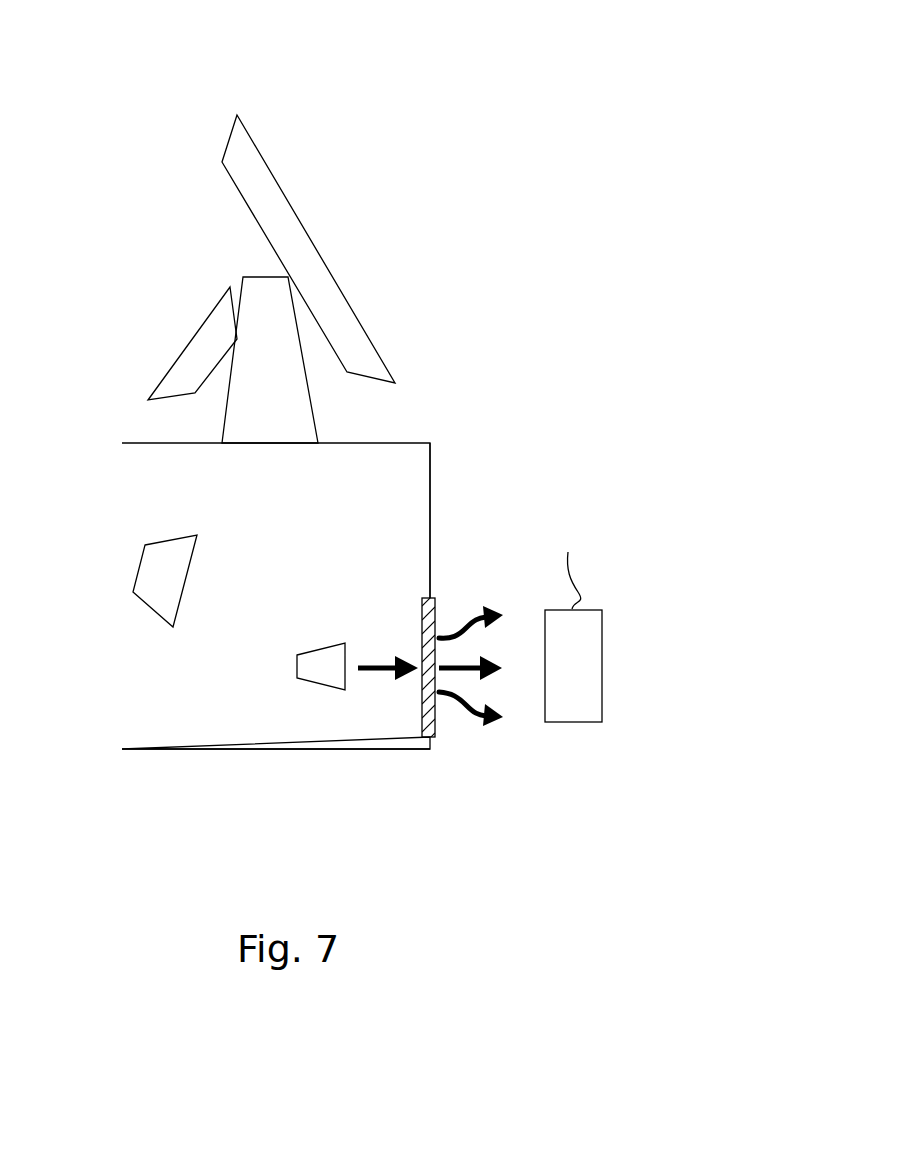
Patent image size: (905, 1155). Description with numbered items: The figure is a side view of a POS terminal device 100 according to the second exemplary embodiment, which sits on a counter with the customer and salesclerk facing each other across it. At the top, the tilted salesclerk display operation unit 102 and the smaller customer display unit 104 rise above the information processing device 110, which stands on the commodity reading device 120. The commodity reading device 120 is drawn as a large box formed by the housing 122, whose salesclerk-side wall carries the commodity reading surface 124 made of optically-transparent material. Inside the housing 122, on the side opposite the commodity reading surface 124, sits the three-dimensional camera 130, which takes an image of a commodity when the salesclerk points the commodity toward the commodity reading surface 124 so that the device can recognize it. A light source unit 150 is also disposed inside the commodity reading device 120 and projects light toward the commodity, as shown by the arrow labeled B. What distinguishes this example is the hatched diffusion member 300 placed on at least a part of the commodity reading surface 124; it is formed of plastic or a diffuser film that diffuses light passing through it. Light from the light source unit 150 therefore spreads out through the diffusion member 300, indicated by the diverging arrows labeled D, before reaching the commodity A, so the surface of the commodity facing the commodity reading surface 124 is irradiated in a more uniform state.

The POS terminal device 100 is at (454, 74).
The salesclerk display operation unit 102 is at (248, 162).
The customer display unit 104 is at (200, 355).
The information processing device 110 is at (237, 417).
The commodity reading device 120 is at (323, 626).
The housing 122 is at (270, 748).
The commodity reading surface 124 is at (439, 497).
The 3D camera 130 is at (155, 578).
The light source unit 150 is at (315, 672).
The diffusion member 300 is at (437, 727).